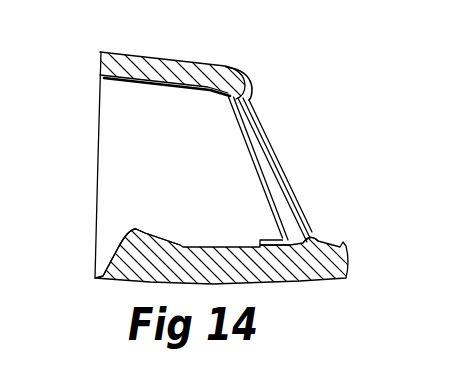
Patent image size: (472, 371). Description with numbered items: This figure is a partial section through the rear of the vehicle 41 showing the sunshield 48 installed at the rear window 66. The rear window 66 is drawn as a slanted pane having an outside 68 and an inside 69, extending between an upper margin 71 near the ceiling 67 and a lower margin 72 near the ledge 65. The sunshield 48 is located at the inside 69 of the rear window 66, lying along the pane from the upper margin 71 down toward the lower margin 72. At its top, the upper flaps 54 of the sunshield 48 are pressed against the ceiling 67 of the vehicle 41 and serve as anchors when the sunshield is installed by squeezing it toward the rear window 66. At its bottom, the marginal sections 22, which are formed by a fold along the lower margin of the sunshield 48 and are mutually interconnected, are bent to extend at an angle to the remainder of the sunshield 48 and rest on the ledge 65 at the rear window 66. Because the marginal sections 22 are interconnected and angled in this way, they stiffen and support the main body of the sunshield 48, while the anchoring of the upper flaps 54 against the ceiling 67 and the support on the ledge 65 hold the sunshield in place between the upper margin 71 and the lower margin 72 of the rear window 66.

The ceiling 67 is at (104, 88).
The upper flaps 54 is at (212, 92).
The upper margin 71 is at (244, 96).
The sunshield 48 is at (241, 130).
The inside 69 is at (268, 162).
The outside 68 is at (287, 172).
The rear window 66 is at (268, 169).
The marginal sections 22 is at (277, 238).
The lower margin 72 is at (311, 233).
The vehicle 41 is at (349, 258).
The ledge 65 is at (190, 245).